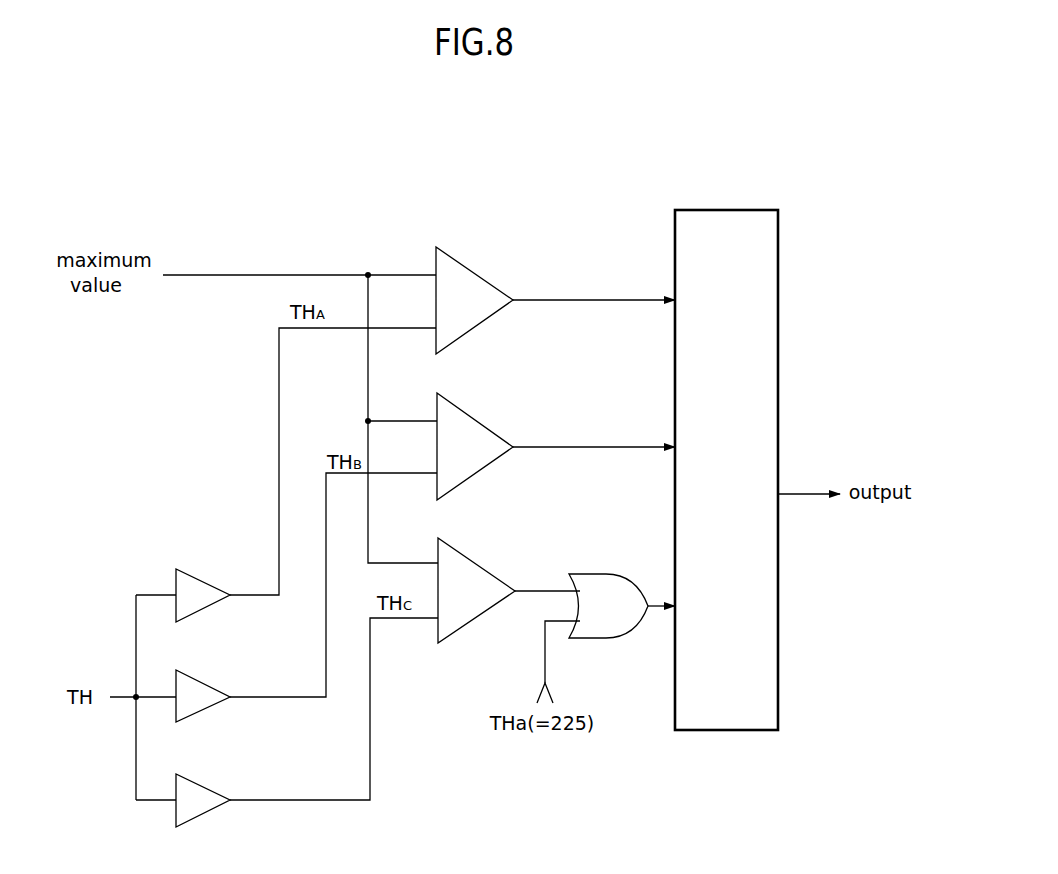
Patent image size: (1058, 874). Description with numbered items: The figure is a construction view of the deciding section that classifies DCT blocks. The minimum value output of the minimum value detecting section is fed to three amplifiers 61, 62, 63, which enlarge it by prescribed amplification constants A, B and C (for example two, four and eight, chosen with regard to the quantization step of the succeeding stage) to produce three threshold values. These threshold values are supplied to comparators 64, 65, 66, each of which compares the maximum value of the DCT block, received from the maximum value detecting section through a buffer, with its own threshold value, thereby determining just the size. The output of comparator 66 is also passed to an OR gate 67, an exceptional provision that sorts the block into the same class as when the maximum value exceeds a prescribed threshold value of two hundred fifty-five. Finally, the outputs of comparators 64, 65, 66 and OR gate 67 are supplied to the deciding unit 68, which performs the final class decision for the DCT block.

The amplifier 61 is at (208, 591).
The amplifier 62 is at (211, 692).
The amplifier 63 is at (214, 796).
The comparator 64 is at (488, 290).
The comparator 65 is at (489, 438).
The comparator 66 is at (489, 585).
The OR gate 67 is at (599, 585).
The deciding unit 68 is at (726, 222).